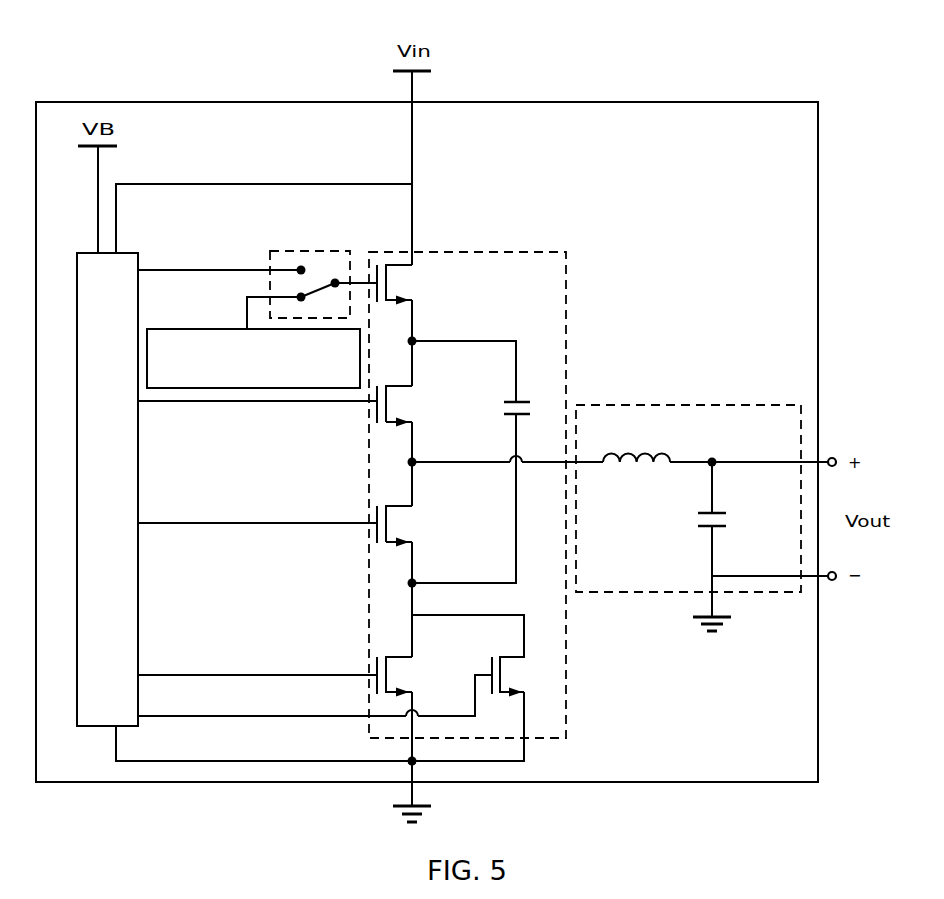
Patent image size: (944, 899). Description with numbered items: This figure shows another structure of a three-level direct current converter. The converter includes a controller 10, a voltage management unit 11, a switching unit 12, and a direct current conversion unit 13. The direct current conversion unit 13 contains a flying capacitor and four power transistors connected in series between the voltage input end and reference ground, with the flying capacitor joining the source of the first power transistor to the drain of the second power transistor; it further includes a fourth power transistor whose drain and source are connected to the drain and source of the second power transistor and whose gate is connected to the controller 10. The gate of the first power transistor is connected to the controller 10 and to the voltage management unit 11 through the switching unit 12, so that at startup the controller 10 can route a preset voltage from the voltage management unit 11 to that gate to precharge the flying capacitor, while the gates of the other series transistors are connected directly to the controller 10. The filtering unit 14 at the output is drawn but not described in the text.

The controller 10 is at (107, 489).
The voltage management unit 11 is at (253, 342).
The switching unit 12 is at (306, 259).
The direct current conversion unit 13 is at (529, 484).
The filtering unit 14 is at (702, 504).